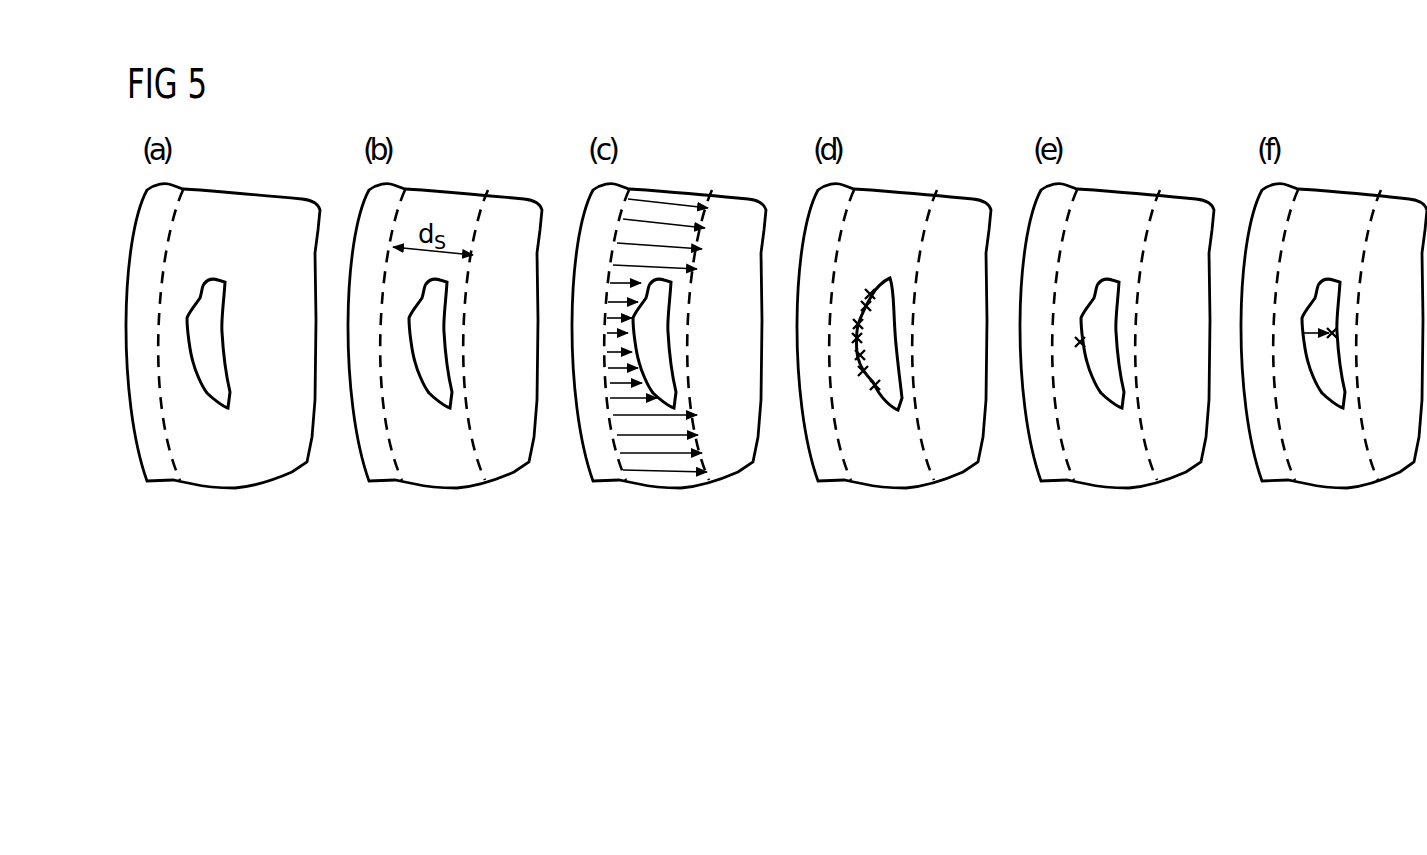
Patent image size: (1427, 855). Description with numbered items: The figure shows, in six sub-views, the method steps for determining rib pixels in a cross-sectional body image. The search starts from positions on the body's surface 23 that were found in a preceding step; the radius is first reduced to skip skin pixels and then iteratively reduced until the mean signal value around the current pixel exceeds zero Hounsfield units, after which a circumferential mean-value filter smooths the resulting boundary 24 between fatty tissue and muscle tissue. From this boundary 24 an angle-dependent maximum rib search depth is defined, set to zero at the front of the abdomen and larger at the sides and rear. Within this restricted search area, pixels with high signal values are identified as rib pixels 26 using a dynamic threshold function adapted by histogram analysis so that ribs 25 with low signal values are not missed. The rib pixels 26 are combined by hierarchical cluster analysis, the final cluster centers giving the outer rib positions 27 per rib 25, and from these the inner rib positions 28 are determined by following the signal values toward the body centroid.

The body's surface 23 is at (145, 468).
The boundary between fatty tissue and muscle tissue 24 is at (176, 453).
The rib 25 is at (216, 287).
The rib pixels 26 is at (868, 367).
The outer rib position 27 is at (1079, 374).
The inner rib position 28 is at (1349, 346).